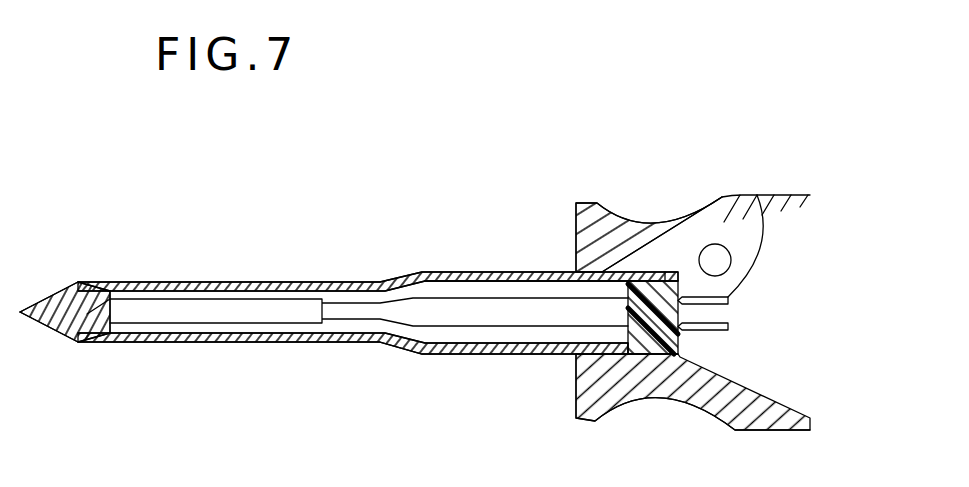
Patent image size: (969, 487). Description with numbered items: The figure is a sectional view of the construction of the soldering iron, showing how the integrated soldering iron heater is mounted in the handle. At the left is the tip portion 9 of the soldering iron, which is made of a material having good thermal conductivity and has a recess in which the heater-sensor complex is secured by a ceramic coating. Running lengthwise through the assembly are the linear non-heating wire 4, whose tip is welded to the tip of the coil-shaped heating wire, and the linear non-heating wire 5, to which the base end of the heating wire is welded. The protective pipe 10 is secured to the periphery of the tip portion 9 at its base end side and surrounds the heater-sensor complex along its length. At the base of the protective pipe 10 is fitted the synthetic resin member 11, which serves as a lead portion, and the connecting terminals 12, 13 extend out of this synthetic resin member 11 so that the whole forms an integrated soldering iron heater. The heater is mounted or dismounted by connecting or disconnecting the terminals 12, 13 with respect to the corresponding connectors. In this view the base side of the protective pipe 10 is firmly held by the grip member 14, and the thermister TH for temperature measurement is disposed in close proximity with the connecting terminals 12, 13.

The linear non-heating wire 4 is at (482, 327).
The linear non-heating wire 5 is at (485, 298).
The tip portion 9 is at (61, 334).
The protective pipe 10 is at (373, 280).
The synthetic resin member 11 is at (655, 333).
The connecting terminal 12 is at (716, 333).
The connecting terminal 13 is at (760, 196).
The grip member 14 is at (760, 431).
The thermister TH is at (708, 244).